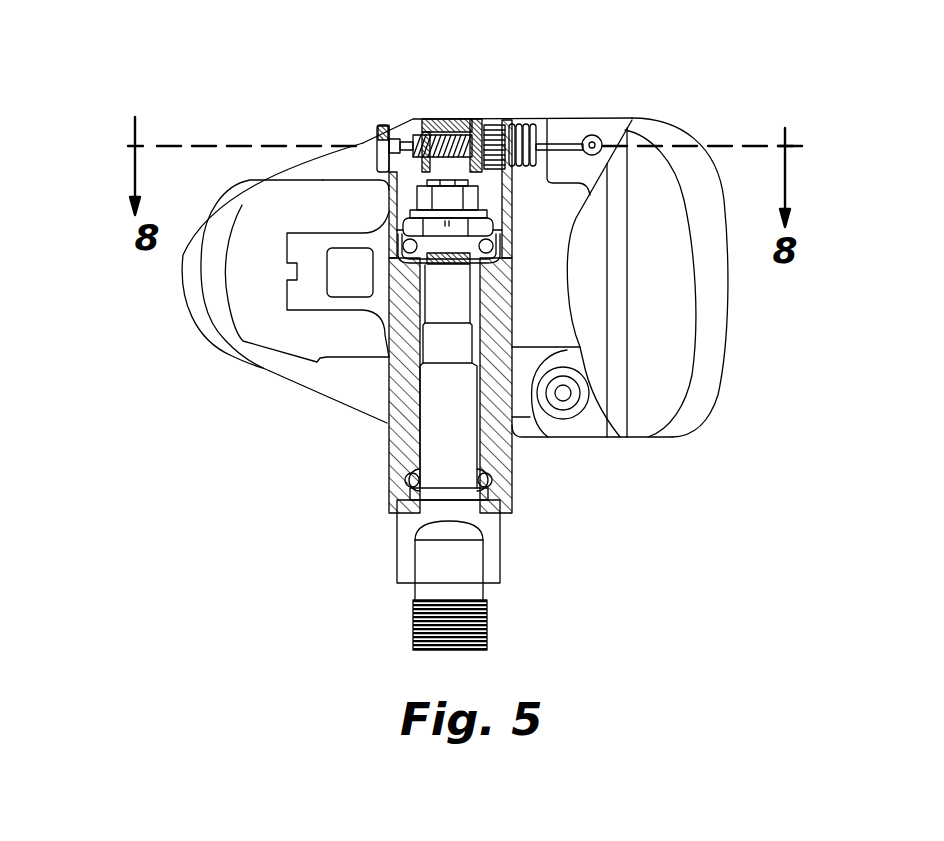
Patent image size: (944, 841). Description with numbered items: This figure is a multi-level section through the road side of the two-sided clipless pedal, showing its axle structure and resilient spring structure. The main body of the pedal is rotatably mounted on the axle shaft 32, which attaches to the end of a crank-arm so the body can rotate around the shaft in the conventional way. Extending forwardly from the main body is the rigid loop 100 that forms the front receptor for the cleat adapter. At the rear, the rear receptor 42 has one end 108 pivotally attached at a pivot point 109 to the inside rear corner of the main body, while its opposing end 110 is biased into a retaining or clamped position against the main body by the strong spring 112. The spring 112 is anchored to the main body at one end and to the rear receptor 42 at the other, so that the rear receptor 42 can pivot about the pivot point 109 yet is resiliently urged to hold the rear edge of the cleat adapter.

The axle shaft 32 is at (493, 570).
The rear receptor 42 is at (673, 310).
The rigid loop 100 is at (197, 298).
The one end of the rear receptor 108 is at (600, 418).
The pivot point 109 is at (563, 400).
The opposing end of the rear receptor 110 is at (648, 128).
The spring 112 is at (532, 118).